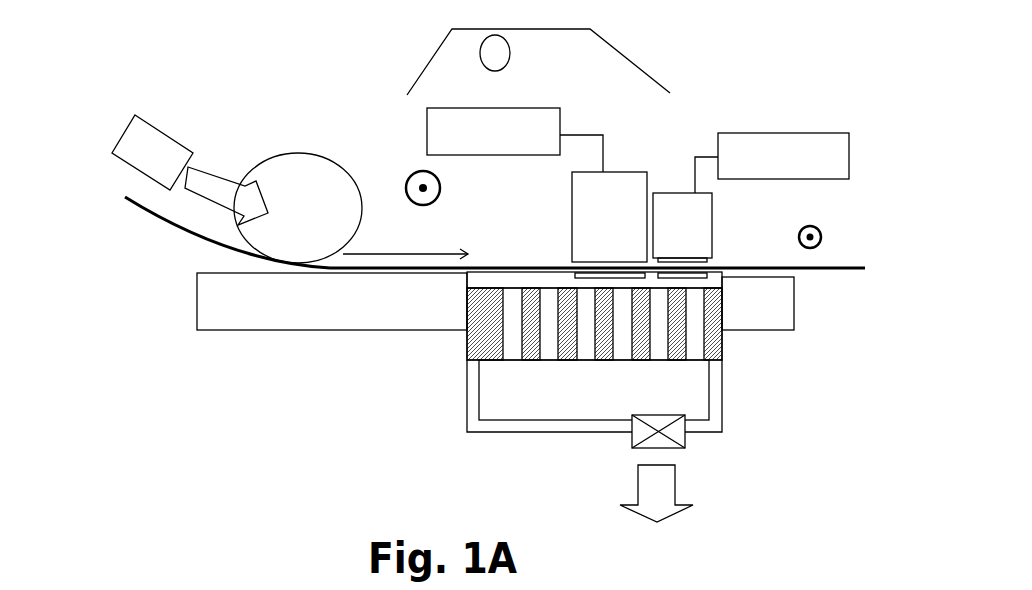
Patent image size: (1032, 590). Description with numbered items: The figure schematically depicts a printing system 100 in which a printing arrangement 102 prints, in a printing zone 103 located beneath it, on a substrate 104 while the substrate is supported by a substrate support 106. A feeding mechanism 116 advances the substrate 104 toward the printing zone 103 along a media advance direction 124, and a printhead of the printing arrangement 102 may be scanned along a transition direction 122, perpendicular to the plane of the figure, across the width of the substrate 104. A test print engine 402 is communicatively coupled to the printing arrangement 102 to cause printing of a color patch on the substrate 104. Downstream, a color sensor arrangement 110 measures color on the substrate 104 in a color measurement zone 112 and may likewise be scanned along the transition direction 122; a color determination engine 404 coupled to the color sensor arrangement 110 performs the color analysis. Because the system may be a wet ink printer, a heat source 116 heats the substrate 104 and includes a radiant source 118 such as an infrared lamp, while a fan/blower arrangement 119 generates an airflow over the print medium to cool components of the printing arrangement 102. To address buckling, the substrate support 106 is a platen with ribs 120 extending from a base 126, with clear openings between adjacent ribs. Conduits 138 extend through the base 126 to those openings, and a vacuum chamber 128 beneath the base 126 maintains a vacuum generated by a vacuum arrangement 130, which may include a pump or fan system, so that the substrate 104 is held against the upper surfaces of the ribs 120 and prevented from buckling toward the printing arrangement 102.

The printing system 100 is at (203, 449).
The printing arrangement 102 is at (642, 258).
The printing zone 103 is at (575, 275).
The substrate 104 is at (188, 233).
The substrate support 106 is at (762, 292).
The color sensor arrangement 110 is at (705, 256).
The color measurement zone 112 is at (708, 263).
The feeding mechanism / heat source 116 is at (632, 31).
The radiant source 118 is at (510, 46).
The fan/blower arrangement 119 is at (121, 132).
The ribs 120 is at (522, 279).
The transition direction 122 is at (421, 172).
The media advance direction 124 is at (428, 253).
The base 126 is at (713, 353).
The vacuum chamber 128 is at (687, 398).
The vacuum arrangement 130 is at (687, 437).
The conduits 138 is at (500, 339).
The test print engine 402 is at (465, 155).
The color determination engine 404 is at (787, 133).